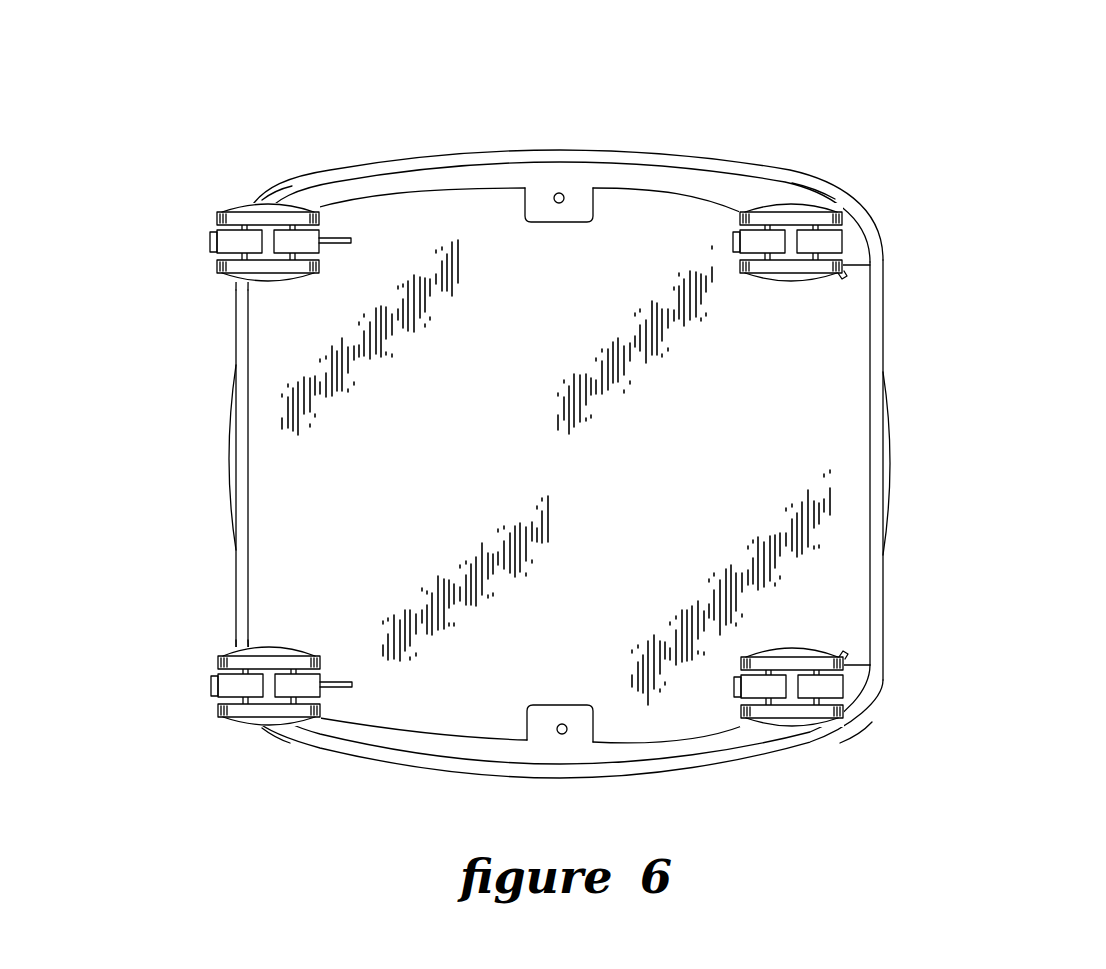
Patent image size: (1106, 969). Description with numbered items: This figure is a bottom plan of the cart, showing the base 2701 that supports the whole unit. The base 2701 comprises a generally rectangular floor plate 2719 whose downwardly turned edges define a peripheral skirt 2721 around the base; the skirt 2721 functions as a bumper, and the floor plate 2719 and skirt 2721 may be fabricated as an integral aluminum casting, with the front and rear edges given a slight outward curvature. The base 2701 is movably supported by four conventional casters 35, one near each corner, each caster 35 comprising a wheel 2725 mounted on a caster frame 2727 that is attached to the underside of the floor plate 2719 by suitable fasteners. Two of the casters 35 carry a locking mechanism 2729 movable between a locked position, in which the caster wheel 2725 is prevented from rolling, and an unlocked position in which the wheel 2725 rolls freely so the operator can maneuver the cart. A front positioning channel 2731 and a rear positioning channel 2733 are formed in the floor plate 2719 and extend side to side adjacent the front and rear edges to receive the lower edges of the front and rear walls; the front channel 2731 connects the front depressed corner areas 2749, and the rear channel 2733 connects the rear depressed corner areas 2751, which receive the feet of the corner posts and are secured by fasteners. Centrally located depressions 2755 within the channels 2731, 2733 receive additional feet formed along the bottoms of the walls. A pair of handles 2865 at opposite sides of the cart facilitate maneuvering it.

The caster 35 is at (231, 195).
The base 2701 is at (559, 446).
The floor plate 2719 is at (456, 696).
The peripheral skirt 2721 is at (713, 162).
The wheel 2725 is at (772, 280).
The caster frame 2727 is at (351, 242).
The locking mechanism 2729 is at (210, 243).
The front positioning channel 2731 is at (615, 152).
The rear positioning channel 2733 is at (720, 757).
The front depressed corner area 2749 is at (290, 193).
The rear depressed corner area 2751 is at (263, 731).
The centrally located depression 2755 is at (548, 220).
The handle 2865 is at (228, 463).